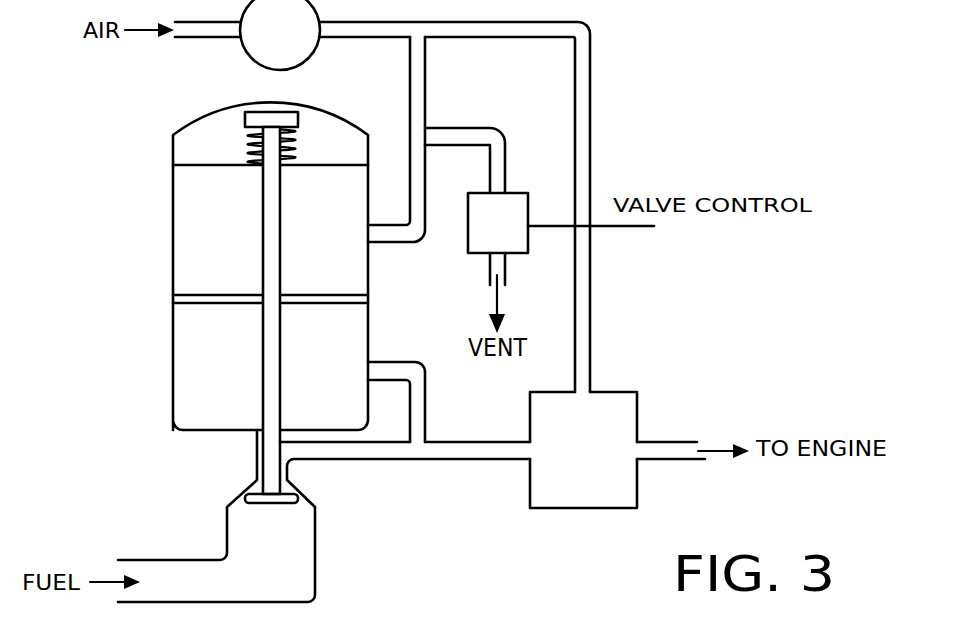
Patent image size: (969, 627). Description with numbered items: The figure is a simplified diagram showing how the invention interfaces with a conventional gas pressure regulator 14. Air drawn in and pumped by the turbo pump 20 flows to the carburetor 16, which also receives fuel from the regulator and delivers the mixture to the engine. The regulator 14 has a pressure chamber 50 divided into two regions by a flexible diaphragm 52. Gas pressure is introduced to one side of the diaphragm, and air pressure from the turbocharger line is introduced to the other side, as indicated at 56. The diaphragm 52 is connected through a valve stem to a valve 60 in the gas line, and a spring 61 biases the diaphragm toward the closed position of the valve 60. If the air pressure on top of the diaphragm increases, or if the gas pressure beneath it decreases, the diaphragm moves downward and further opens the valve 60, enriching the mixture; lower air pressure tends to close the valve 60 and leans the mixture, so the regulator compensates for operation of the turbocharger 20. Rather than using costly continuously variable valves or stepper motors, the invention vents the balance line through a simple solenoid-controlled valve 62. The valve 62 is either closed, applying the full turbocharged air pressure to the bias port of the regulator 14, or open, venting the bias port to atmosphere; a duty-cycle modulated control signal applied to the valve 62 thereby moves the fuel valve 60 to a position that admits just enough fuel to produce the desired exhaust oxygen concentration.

The fuel pressure regulator 14 is at (150, 385).
The carburetor 16 is at (575, 509).
The turbo pump 20 is at (316, 56).
The pressure chamber 50 is at (173, 219).
The diaphragm 52 is at (208, 304).
The air pressure inlet 56 is at (390, 243).
The valve 60 is at (343, 513).
The spring 61 is at (296, 141).
The solenoid-controlled valve 62 is at (468, 231).